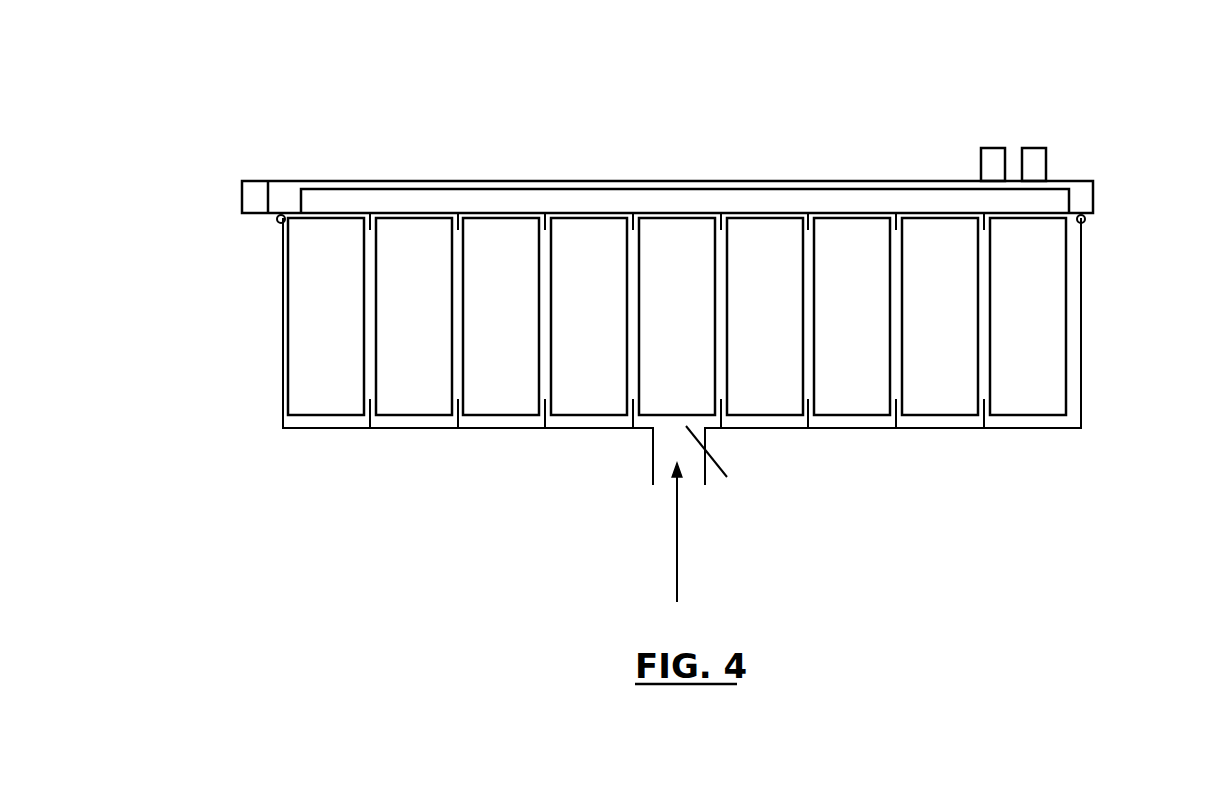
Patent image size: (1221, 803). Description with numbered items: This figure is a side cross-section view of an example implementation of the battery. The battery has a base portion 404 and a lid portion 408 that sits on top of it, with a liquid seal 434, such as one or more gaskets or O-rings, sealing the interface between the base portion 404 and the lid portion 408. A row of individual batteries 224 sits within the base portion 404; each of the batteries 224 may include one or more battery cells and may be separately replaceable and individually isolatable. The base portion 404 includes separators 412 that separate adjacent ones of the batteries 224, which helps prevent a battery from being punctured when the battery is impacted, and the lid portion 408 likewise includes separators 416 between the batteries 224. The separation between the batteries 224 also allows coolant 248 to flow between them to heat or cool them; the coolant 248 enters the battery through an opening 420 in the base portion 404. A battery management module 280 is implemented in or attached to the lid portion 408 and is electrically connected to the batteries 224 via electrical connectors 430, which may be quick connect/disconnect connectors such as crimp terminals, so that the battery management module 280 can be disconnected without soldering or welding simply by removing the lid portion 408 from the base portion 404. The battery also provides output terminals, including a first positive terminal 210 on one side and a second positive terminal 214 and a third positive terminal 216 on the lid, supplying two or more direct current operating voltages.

The first positive terminal 210 is at (240, 193).
The lid portion 408 is at (290, 181).
The battery management module 280 is at (688, 188).
The second positive terminal 214 is at (993, 148).
The third positive terminal 216 is at (1046, 157).
The base portion 404 is at (283, 318).
The liquid seal 434 is at (278, 221).
The batteries 224 is at (677, 316).
The separators 416 is at (370, 213).
The electrical connectors 430 is at (345, 216).
The separators 412 is at (368, 428).
The opening 420 is at (727, 477).
The coolant 248 is at (679, 568).